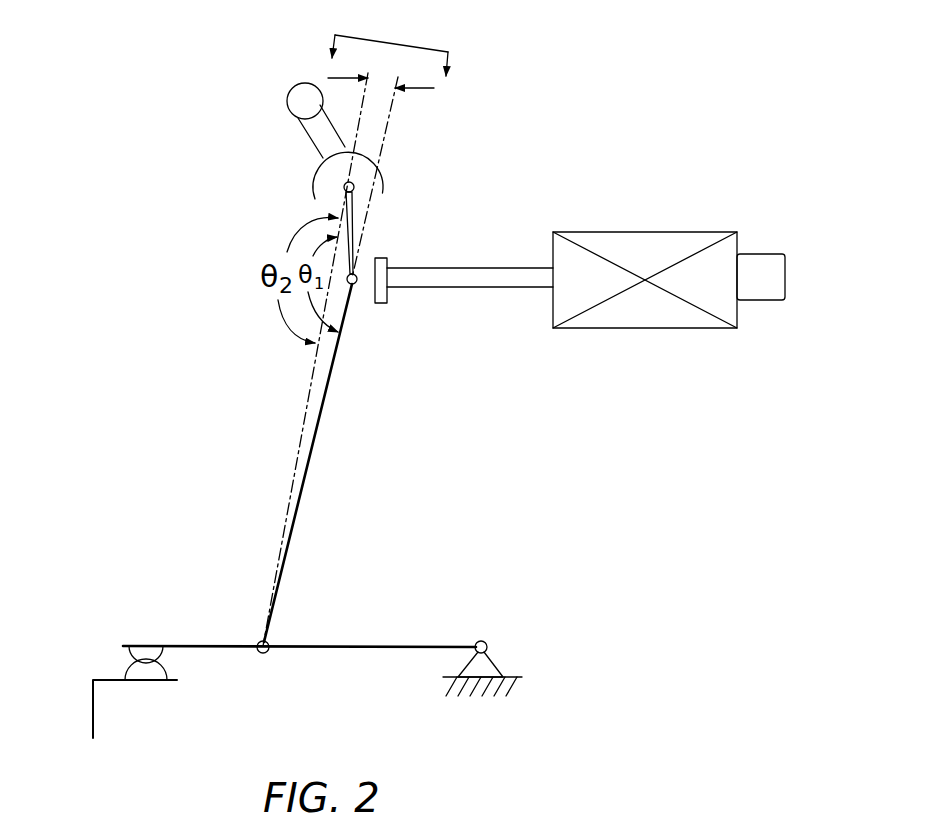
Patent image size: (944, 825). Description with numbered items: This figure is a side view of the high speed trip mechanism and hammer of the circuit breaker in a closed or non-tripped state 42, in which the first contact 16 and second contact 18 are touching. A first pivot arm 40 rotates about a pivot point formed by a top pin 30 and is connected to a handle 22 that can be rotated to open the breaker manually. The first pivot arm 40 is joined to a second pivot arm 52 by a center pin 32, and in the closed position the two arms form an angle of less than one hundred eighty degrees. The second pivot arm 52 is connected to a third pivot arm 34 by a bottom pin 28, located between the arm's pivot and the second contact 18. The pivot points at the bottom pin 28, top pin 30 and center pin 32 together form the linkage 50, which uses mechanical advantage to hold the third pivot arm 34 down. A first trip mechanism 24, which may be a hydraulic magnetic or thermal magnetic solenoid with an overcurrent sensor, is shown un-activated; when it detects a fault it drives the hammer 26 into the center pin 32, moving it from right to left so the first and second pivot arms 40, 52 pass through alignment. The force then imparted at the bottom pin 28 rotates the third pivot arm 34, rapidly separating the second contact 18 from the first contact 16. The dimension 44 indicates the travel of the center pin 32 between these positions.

The first contact 16 is at (126, 676).
The second contact 18 is at (132, 660).
The handle 22 is at (294, 86).
The first trip mechanism 24 is at (645, 221).
The hammer 26 is at (383, 258).
The bottom pin 28 is at (268, 652).
The top pin 30 is at (344, 186).
The center pin 32 is at (355, 286).
The third pivot arm 34 is at (375, 645).
The first pivot arm 40 is at (353, 234).
The closed or non-tripped state 42 is at (154, 631).
The stroke distance 44 is at (391, 43).
The linkage 50 is at (393, 378).
The second pivot arm 52 is at (323, 403).